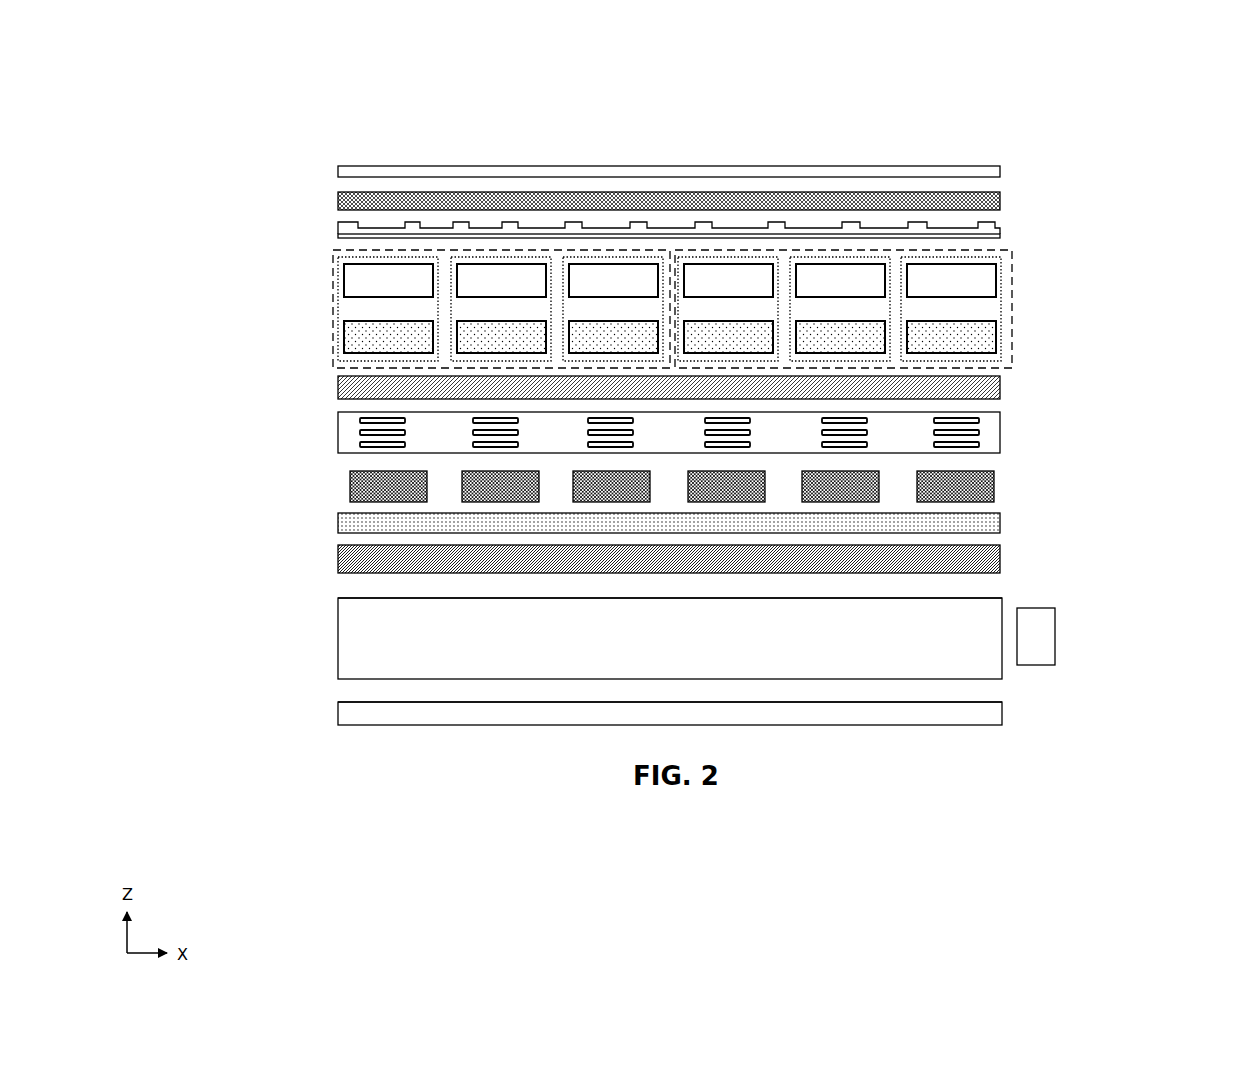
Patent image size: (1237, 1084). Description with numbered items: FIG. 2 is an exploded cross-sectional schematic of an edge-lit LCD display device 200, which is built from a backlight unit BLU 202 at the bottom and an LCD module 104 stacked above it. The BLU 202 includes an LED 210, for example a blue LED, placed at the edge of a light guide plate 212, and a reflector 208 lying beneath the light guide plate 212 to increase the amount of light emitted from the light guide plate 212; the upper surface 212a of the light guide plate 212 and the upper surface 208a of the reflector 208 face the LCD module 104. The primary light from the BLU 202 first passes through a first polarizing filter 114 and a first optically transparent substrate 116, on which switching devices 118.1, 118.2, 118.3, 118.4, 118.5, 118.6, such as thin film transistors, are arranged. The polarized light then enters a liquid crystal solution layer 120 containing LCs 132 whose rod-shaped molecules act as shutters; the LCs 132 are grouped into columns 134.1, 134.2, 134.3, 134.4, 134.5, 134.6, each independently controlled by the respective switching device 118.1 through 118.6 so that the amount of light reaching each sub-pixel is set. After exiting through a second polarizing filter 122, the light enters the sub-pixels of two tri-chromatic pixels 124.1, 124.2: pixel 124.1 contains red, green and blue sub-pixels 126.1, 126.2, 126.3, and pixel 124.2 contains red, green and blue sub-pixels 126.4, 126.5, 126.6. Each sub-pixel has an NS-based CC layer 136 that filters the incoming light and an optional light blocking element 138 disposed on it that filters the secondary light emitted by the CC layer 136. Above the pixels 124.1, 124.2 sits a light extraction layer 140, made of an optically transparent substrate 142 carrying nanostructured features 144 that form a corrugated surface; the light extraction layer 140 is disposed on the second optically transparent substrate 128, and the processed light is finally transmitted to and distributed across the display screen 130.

The edge-lit LCD display device 200 is at (1103, 126).
The LCD module 104 is at (1078, 153).
The display screen 130 is at (988, 173).
The second optically transparent substrate 128 is at (987, 200).
The light extraction layer 140 is at (648, 231).
The nanostructured features 144 is at (340, 223).
The optically transparent substrate 142 is at (340, 237).
The pixel 124.1 is at (333, 288).
The pixel 124.2 is at (1012, 288).
The red sub-pixel 126.1 is at (386, 253).
The green sub-pixel 126.2 is at (503, 253).
The blue sub-pixel 126.3 is at (613, 253).
The red sub-pixel 126.4 is at (728, 253).
The green sub-pixel 126.5 is at (840, 253).
The blue sub-pixel 126.6 is at (951, 253).
The light blocking element 138 is at (670, 280).
The NS-based CC layer 136 is at (670, 337).
The second polarizing filter 122 is at (987, 383).
The liquid crystal solution layer 120 is at (1003, 430).
The LCs 132 is at (378, 447).
The column 134.1 is at (357, 416).
The column 134.2 is at (470, 416).
The column 134.3 is at (585, 416).
The column 134.4 is at (702, 416).
The column 134.5 is at (819, 416).
The column 134.6 is at (931, 416).
The switching device 118.1 is at (388, 486).
The switching device 118.2 is at (500, 486).
The switching device 118.3 is at (611, 486).
The switching device 118.4 is at (726, 486).
The switching device 118.5 is at (840, 486).
The switching device 118.6 is at (955, 486).
The first optically transparent substrate 116 is at (987, 523).
The first polarizing filter 114 is at (987, 553).
The BLU 202 is at (1103, 755).
The light guide plate 212 is at (980, 657).
The housing body top surface 212a is at (386, 583).
The LED 210 is at (1053, 620).
The reflector 208 is at (980, 712).
The base plate top surface 208a is at (358, 701).